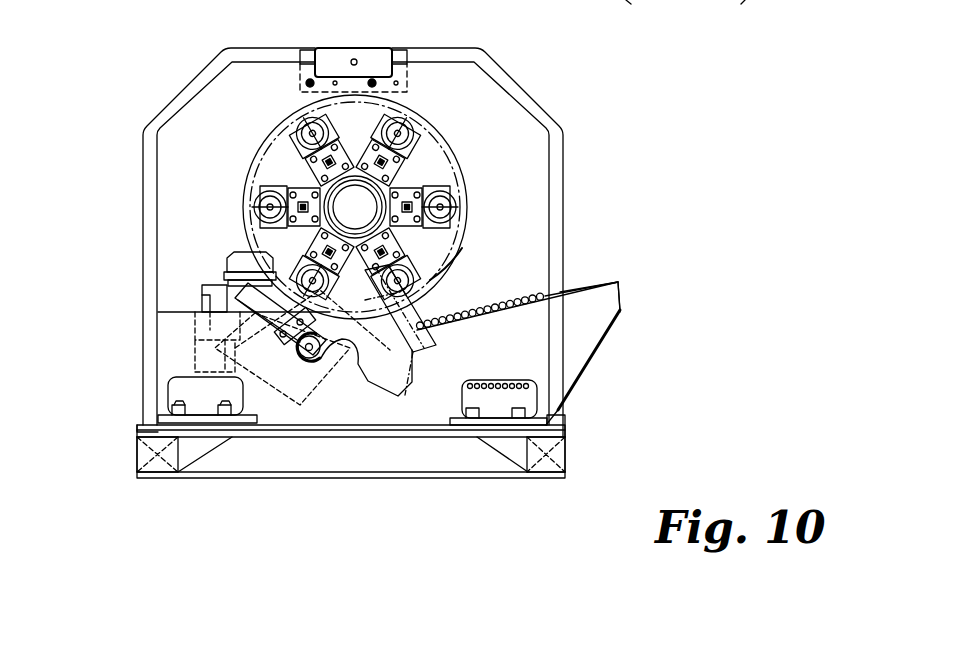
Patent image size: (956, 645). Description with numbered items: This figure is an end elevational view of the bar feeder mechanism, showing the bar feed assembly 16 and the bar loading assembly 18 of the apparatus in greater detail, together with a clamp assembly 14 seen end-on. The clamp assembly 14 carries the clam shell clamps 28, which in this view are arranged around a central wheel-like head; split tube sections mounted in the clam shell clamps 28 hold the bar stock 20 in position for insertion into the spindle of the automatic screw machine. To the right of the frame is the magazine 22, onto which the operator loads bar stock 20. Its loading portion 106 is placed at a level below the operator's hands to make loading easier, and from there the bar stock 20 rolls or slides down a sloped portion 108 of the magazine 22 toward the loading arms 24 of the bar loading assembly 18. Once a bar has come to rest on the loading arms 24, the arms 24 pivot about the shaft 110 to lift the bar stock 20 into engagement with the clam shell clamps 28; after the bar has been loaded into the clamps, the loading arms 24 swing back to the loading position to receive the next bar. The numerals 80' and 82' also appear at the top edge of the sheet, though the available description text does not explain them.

The indexing wheel assembly 14 is at (241, 221).
The inclined plate 16 is at (596, 356).
The gripper 18 is at (340, 366).
The ball chain guide 20 is at (468, 308).
The hopper 22 is at (600, 318).
The rim guide segment 24 is at (458, 262).
The wheel rim 28 is at (428, 140).
The hopper side wall 106 is at (619, 282).
The hopper top edge 108 is at (590, 280).
The pivot 110 is at (318, 362).
The clamp member 80' is at (645, 13).
The clamp member 82' is at (725, 13).